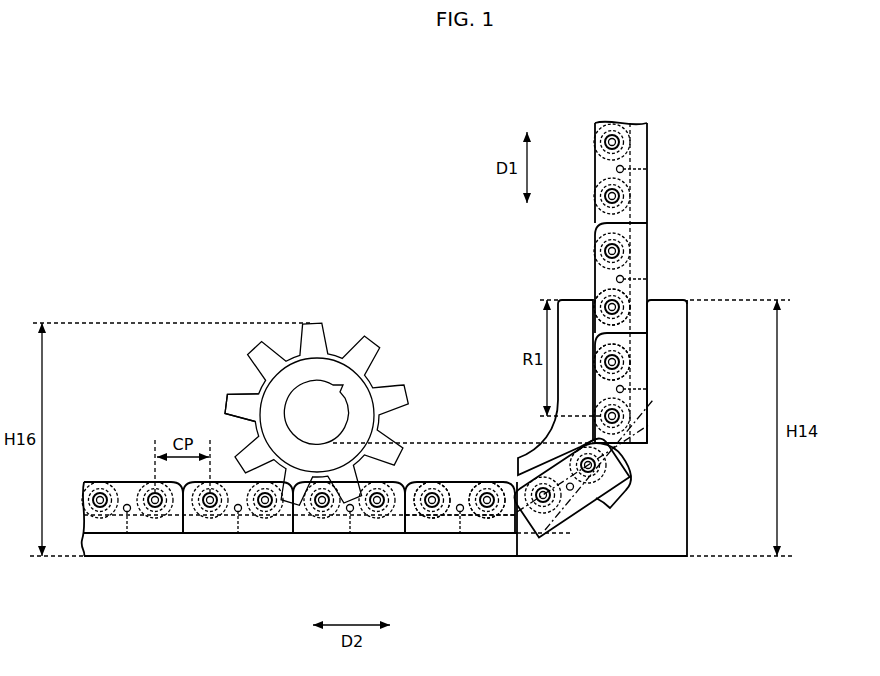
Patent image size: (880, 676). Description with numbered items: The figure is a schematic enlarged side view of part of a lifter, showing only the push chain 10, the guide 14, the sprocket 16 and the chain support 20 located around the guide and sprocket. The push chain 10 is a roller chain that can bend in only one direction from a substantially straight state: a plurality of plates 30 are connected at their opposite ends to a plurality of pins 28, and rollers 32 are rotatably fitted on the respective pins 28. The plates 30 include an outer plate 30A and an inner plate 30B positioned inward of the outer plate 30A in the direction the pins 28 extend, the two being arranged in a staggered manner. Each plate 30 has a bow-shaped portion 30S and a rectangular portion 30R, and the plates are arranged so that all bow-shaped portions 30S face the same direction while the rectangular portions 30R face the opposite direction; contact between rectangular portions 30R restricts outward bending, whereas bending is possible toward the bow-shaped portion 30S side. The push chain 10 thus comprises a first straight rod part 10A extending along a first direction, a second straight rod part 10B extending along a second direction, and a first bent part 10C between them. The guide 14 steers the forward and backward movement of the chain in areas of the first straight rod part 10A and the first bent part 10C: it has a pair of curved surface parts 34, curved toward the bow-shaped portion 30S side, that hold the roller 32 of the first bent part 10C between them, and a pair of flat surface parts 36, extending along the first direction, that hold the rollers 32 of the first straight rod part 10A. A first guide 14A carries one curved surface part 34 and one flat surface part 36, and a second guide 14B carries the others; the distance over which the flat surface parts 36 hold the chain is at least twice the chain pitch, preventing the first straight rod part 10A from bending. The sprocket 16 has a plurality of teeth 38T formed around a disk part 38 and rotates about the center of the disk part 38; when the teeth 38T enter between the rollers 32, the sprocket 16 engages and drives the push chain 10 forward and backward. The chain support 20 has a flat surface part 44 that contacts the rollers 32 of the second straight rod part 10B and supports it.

The push chain 10 is at (452, 476).
The first straight rod part 10A is at (650, 192).
The second straight rod part 10B is at (100, 538).
The first bent part 10C is at (635, 472).
The guide 14 is at (665, 560).
The first guide 14A is at (668, 300).
The second guide 14B is at (562, 300).
The sprocket 16 is at (410, 366).
The chain support 20 is at (268, 548).
The pins 28 is at (487, 502).
The plates 30 is at (503, 540).
The outer plate 30A is at (412, 528).
The inner plate 30B is at (557, 532).
The rectangular portion 30R is at (193, 520).
The bow-shaped portion 30S is at (152, 482).
The rollers 32 is at (377, 502).
The curved surface parts 34 is at (606, 506).
The flat surface parts 36 is at (596, 376).
The disk part 38 is at (327, 378).
The teeth 38T is at (236, 405).
The flat surface part 44 is at (240, 512).